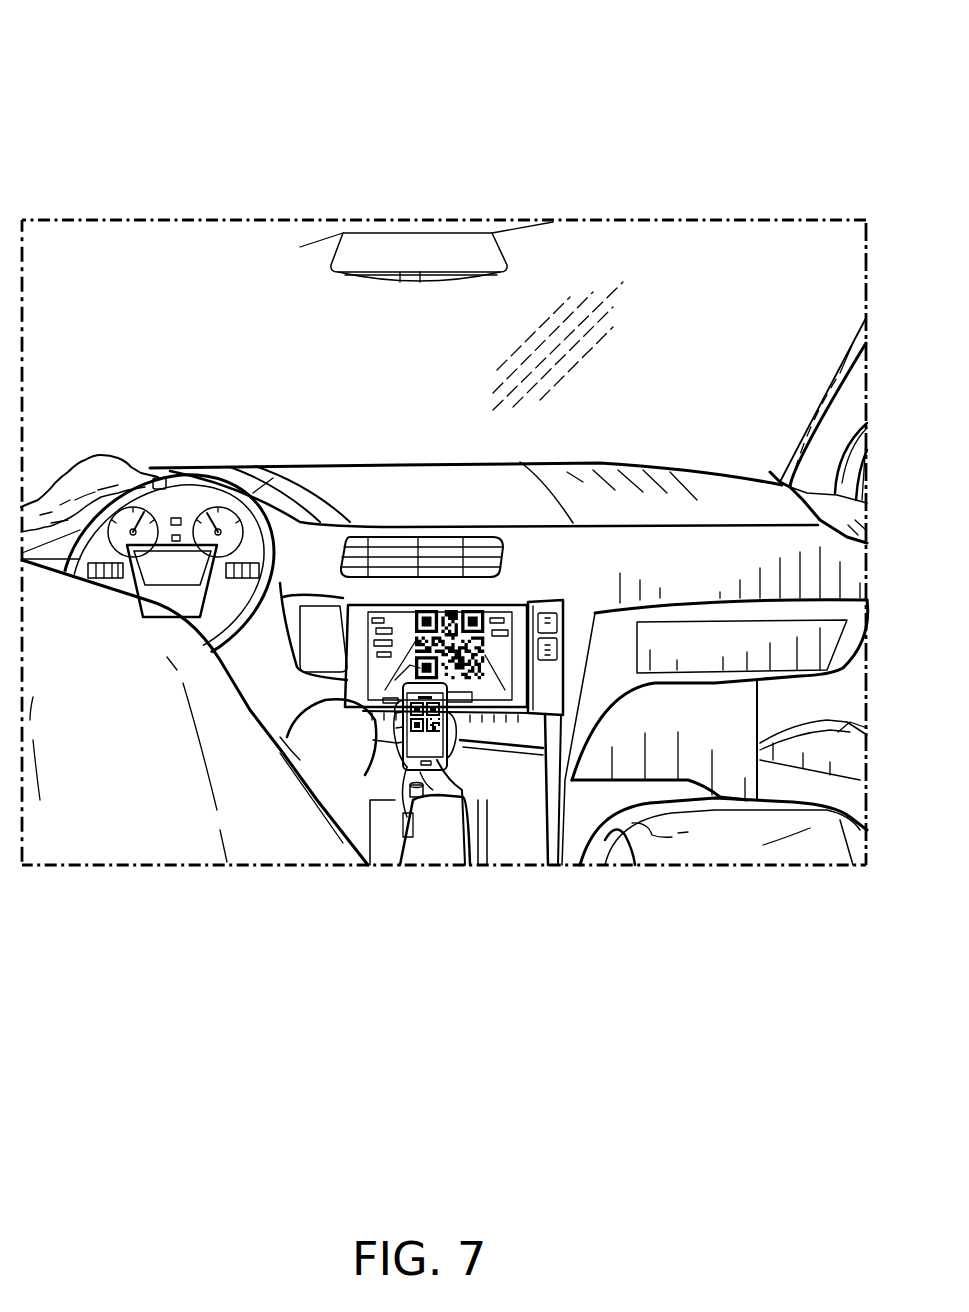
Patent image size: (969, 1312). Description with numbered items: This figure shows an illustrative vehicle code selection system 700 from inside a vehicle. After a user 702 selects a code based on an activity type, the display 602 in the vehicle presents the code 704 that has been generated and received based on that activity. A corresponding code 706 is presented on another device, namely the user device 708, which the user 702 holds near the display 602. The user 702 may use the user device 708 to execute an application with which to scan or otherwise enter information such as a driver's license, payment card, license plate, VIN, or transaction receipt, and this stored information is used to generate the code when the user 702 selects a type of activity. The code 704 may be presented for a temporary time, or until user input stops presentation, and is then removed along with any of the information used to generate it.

The vehicle code selection system 700 is at (806, 26).
The user 702 is at (136, 452).
The display 602 is at (458, 601).
The code 704 is at (427, 617).
The corresponding code 706 is at (437, 720).
The user device 708 is at (400, 776).